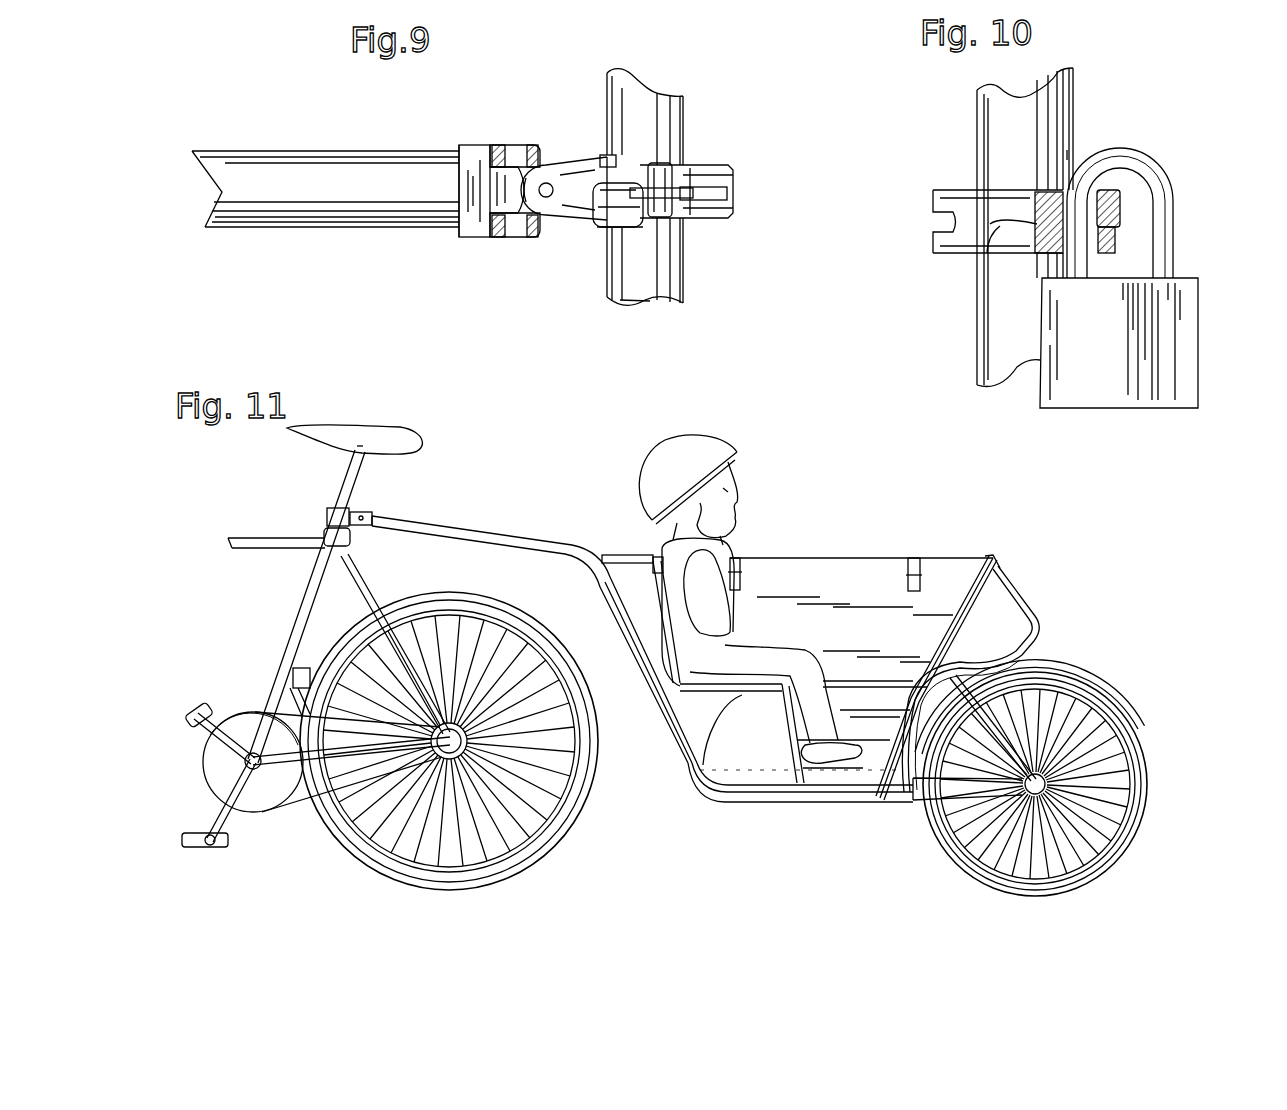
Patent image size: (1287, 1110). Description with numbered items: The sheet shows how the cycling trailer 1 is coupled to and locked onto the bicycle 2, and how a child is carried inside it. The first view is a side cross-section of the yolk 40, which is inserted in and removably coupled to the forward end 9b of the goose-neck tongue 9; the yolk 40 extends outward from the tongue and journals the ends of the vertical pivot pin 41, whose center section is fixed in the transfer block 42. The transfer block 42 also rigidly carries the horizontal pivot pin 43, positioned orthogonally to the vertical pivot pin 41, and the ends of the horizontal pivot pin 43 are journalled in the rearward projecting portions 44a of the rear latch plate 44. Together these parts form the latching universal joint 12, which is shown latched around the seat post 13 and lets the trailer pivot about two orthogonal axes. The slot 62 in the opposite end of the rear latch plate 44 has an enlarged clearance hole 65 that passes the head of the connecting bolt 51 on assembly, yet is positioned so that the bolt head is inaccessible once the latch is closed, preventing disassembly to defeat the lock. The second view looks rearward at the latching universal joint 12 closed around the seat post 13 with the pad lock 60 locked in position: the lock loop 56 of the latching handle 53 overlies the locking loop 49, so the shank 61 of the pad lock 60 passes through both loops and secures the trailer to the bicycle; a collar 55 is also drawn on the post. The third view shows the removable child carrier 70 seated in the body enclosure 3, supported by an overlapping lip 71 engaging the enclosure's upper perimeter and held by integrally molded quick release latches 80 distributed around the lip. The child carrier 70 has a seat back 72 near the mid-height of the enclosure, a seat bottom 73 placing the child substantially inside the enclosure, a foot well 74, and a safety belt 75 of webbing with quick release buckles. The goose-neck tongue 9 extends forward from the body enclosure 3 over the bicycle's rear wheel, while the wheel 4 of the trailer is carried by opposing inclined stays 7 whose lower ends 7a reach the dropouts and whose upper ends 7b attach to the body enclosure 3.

In FIG. 11, the cycling trailer 1 is at (958, 500).
In FIG. 11, the bicycle 2 is at (276, 522).
In FIG. 11, the body enclosure 3 is at (824, 667).
In FIG. 11, the wheel 4 is at (1103, 702).
In FIG. 11, the inclined stays 7 is at (1030, 690).
In FIG. 11, the lower ends of inclined stays 7a is at (1087, 682).
In FIG. 11, the upper ends of inclined stays 7b is at (1022, 657).
In FIG. 11, the goose-neck tongue 9 is at (480, 533).
In FIG. 9, the forward end of goose-neck tongue 9b is at (333, 203).
In FIG. 9, the latching universal joint 12 is at (568, 68).
In FIG. 10, the latching universal joint 12 is at (947, 282).
In FIG. 11, the latching universal joint 12 is at (388, 503).
In FIG. 9, the seat post 13 is at (662, 113).
In FIG. 10, the seat post 13 is at (1048, 120).
In FIG. 11, the seat post 13 is at (352, 484).
In FIG. 9, the yolk 40 is at (467, 237).
In FIG. 9, the vertical pivot pin 41 is at (515, 237).
In FIG. 9, the transfer block 42 is at (497, 183).
In FIG. 9, the horizontal pivot pin 43 is at (547, 197).
In FIG. 9, the rear latch plate 44 is at (577, 170).
In FIG. 9, the rearward projecting portions 44a is at (540, 170).
In FIG. 9, the locking loop 49 is at (733, 212).
In FIG. 10, the locking loop 49 is at (1118, 245).
In FIG. 9, the connecting bolt 51 is at (677, 217).
In FIG. 9, the latching handle 53 is at (720, 177).
In FIG. 10, the latching handle 53 is at (978, 205).
In FIG. 9, the collar 55 is at (660, 220).
In FIG. 10, the lock loop 56 is at (1118, 207).
In FIG. 10, the pad lock 60 is at (1173, 355).
In FIG. 10, the shank 61 is at (1152, 178).
In FIG. 9, the slot 62 is at (640, 302).
In FIG. 9, the clearance hole 65 is at (597, 227).
In FIG. 11, the child carrier 70 is at (807, 587).
In FIG. 11, the overlapping lip 71 is at (997, 562).
In FIG. 11, the seat back 72 is at (650, 647).
In FIG. 11, the seat bottom 73 is at (700, 763).
In FIG. 11, the foot well 74 is at (866, 768).
In FIG. 11, the safety belt 75 is at (630, 613).
In FIG. 11, the quick release latches 80 is at (737, 558).